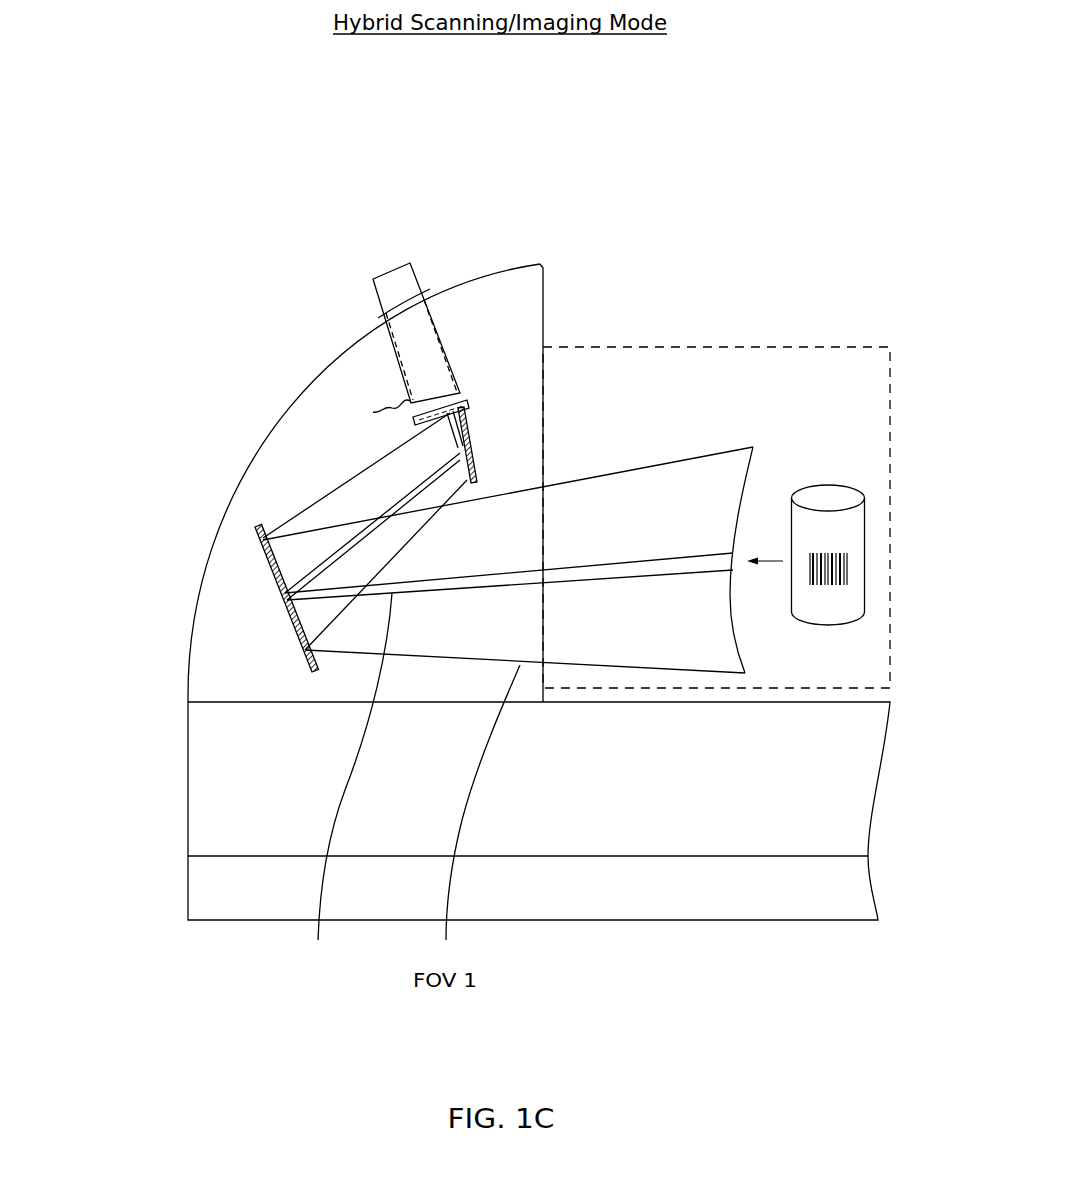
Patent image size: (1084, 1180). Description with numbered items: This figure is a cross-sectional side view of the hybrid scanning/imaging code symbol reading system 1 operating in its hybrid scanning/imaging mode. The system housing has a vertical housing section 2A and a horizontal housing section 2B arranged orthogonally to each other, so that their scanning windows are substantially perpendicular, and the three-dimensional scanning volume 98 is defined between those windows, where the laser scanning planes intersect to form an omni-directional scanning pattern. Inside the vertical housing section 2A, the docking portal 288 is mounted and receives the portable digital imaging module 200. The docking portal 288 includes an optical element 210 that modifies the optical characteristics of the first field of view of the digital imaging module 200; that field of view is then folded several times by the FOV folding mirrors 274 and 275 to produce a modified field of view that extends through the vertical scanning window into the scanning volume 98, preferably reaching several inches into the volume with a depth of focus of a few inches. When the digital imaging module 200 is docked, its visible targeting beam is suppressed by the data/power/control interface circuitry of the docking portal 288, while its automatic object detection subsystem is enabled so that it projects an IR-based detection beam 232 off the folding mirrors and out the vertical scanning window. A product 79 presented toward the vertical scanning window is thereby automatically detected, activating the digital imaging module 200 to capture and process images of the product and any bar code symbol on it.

The hybrid scanning/imaging code symbol reading system 1 is at (835, 115).
The vertical housing section 2A is at (545, 310).
The horizontal housing section 2B is at (188, 777).
The 3D scanning volume 98 is at (789, 347).
The object with bar code 79 is at (829, 496).
The portable digital imaging module 200 is at (390, 272).
The docking portal 288 is at (400, 396).
The FOV folding mirror 274 is at (472, 403).
The optical element 210 is at (475, 419).
The FOV folding mirror 275 is at (260, 575).
The IR-based detection beam 232 is at (332, 826).